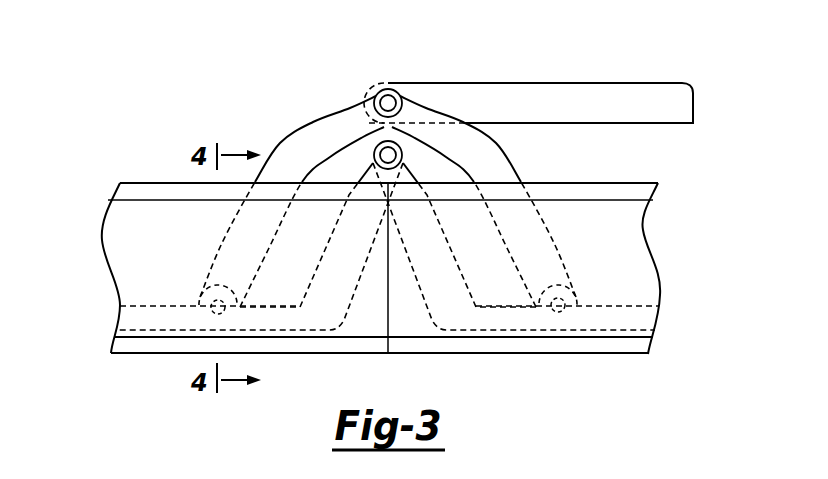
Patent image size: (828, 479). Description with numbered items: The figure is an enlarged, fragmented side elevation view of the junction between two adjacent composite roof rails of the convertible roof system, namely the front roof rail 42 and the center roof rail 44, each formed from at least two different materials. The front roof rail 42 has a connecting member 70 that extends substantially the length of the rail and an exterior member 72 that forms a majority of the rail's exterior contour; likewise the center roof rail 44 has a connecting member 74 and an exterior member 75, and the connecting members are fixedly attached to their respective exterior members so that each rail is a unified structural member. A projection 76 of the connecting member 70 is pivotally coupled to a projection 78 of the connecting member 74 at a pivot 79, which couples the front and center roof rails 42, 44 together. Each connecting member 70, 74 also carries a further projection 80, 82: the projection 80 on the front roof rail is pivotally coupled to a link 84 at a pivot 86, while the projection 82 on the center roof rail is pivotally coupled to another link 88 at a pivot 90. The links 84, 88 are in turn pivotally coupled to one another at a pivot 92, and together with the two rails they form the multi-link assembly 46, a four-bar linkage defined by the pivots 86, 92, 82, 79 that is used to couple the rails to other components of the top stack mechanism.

The front roof rail 42 is at (117, 238).
The center roof rail 44 is at (628, 224).
The multi-link assembly 46 is at (447, 51).
The connecting member 70 is at (313, 320).
The exterior member 72 is at (137, 213).
The connecting member 74 is at (493, 320).
The exterior member 75 is at (616, 212).
The projection 76 is at (333, 260).
The projection 78 is at (443, 262).
The pivot 79 is at (388, 155).
The projection 80 is at (203, 301).
The projection 82 is at (577, 298).
The link 84 is at (354, 110).
The pivot 86 is at (237, 300).
The link 88 is at (508, 160).
The pivot 90 is at (540, 298).
The pivot 92 is at (388, 103).